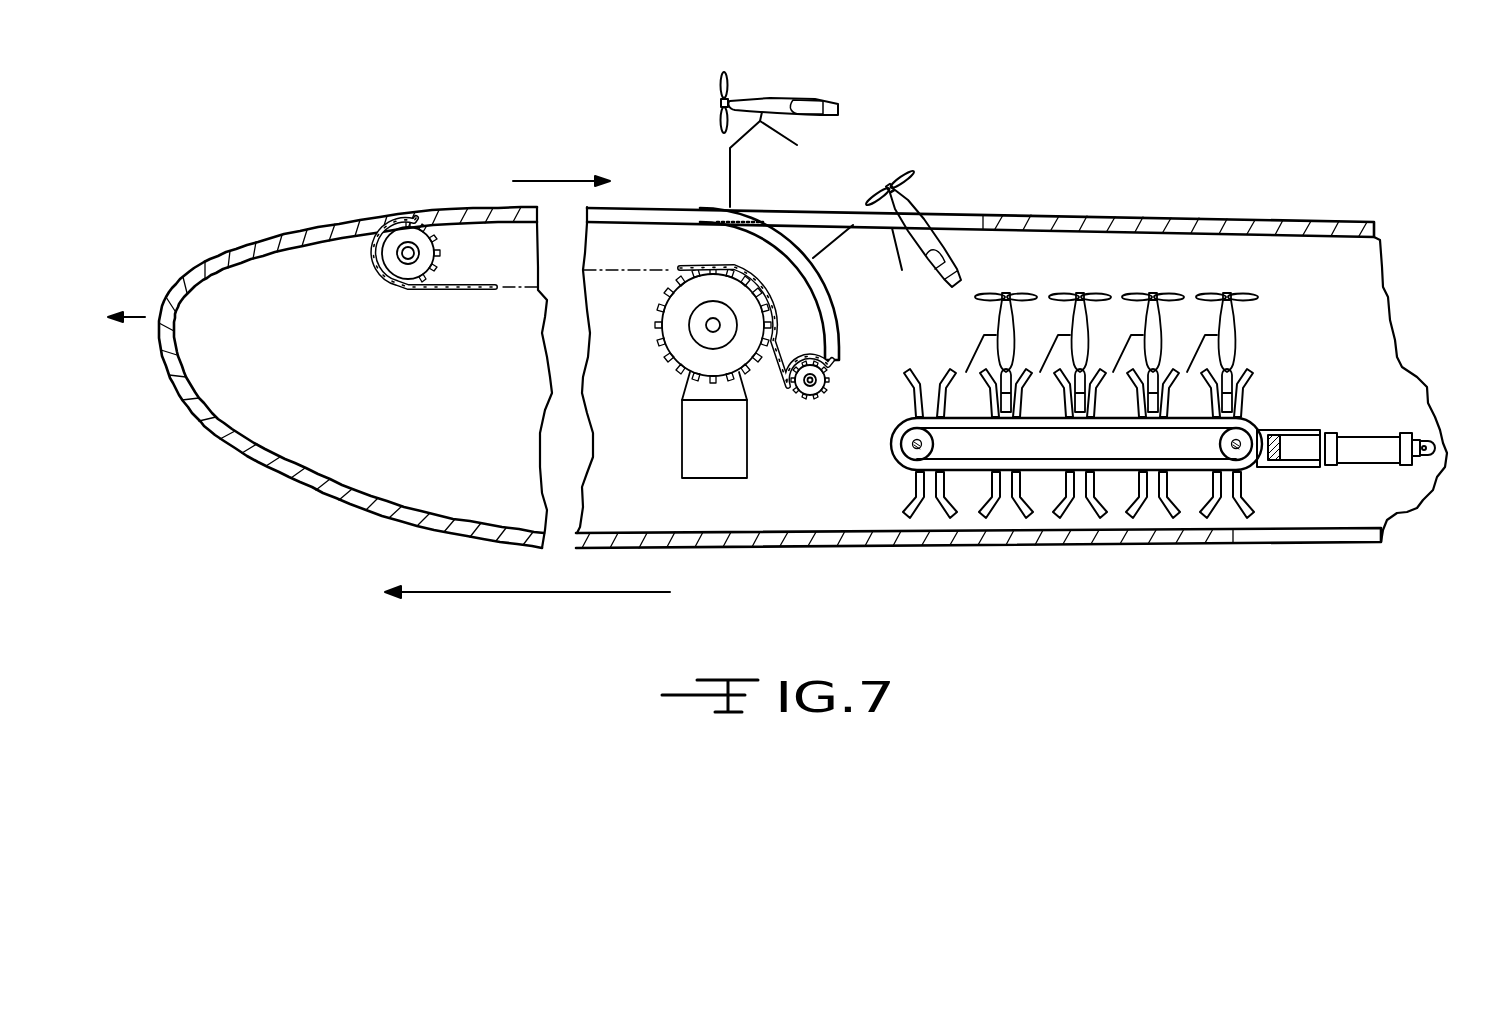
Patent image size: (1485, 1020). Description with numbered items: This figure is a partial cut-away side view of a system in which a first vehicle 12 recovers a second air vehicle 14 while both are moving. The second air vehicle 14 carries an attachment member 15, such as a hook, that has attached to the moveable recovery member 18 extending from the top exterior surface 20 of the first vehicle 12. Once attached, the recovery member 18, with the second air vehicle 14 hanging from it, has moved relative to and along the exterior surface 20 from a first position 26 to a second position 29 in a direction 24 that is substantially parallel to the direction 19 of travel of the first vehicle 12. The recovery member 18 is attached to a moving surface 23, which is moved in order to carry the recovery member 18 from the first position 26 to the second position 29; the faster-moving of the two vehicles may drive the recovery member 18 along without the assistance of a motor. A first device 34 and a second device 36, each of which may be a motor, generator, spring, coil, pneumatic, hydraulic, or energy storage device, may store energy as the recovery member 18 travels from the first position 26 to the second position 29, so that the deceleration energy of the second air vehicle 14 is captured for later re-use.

The first vehicle 12 is at (270, 240).
The second air vehicle 14 is at (757, 100).
The attachment member 15 is at (787, 140).
The moveable recovery member 18 is at (741, 150).
The direction of travel 19 is at (508, 594).
The first exterior surface 20 is at (443, 207).
The moving surface 23 is at (662, 210).
The direction 24 is at (557, 180).
The first position 26 is at (405, 207).
The second position 29 is at (728, 197).
The first device 34 is at (678, 325).
The second device 36 is at (386, 268).